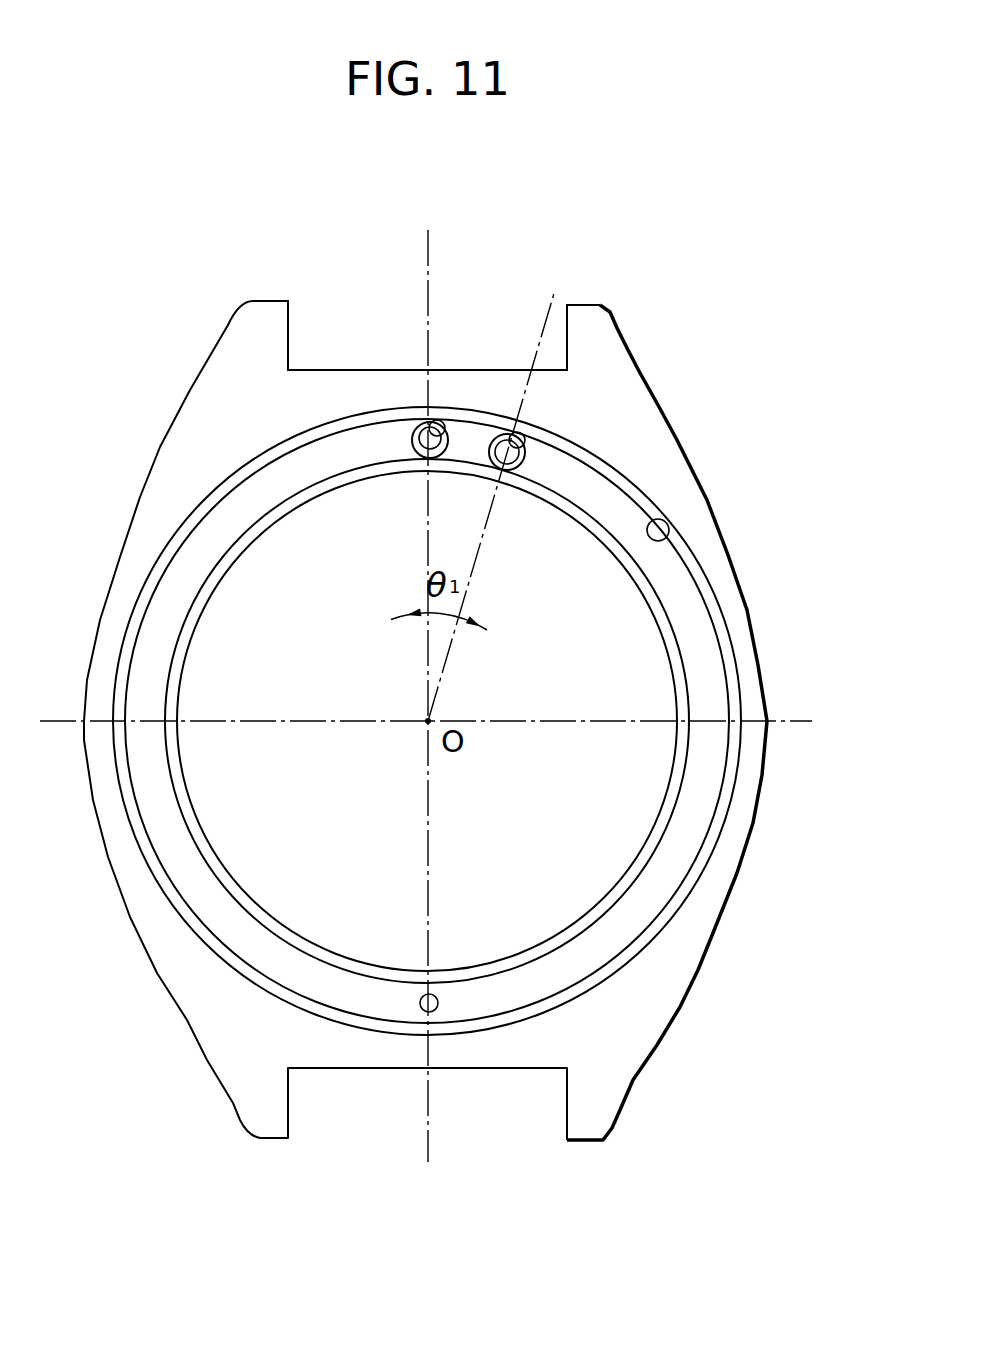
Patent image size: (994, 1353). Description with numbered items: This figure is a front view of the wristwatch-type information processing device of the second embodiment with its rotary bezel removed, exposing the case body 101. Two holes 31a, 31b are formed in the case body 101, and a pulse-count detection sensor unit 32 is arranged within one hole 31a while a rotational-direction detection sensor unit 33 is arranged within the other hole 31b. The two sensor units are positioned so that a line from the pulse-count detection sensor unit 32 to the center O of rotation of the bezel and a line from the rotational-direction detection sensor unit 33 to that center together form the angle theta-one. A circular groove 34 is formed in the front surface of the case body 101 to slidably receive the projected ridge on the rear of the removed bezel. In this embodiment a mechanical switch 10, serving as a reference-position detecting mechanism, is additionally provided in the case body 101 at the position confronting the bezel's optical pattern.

The mechanical switch 10 is at (435, 1007).
The hole 31a is at (437, 422).
The hole 31b is at (532, 440).
The pulse-count detection sensor unit 32 is at (429, 428).
The rotational-direction detection sensor unit 33 is at (510, 467).
The circular groove 34 is at (668, 535).
The case body 101 is at (727, 588).